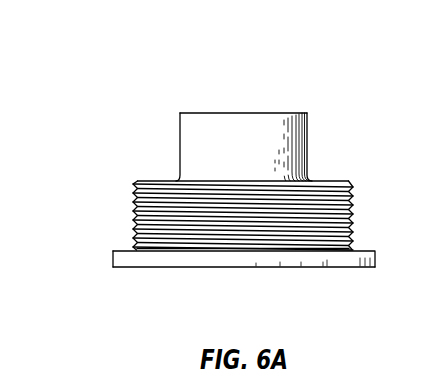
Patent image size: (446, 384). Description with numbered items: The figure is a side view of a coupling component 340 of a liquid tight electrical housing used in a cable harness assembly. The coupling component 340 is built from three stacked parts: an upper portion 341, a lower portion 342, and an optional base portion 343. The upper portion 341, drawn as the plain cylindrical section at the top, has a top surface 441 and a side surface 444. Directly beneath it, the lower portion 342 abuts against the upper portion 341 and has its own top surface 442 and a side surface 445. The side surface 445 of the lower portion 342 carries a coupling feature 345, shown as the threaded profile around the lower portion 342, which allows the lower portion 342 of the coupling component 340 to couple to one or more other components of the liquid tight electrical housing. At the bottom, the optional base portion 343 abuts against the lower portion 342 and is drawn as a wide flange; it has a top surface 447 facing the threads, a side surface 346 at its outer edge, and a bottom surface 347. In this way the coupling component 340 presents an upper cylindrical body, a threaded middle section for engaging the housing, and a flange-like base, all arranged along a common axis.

The coupling component 340 is at (139, 49).
The upper portion 341 is at (342, 122).
The lower portion 342 is at (347, 176).
The base portion 343 is at (139, 274).
The coupling feature 345 is at (128, 206).
The side surface 346 is at (113, 258).
The bottom surface 347 is at (193, 268).
The top surface 441 is at (220, 111).
The top surface 442 is at (148, 180).
The side surface 444 is at (180, 137).
The side surface 445 is at (357, 216).
The top surface 447 is at (366, 251).